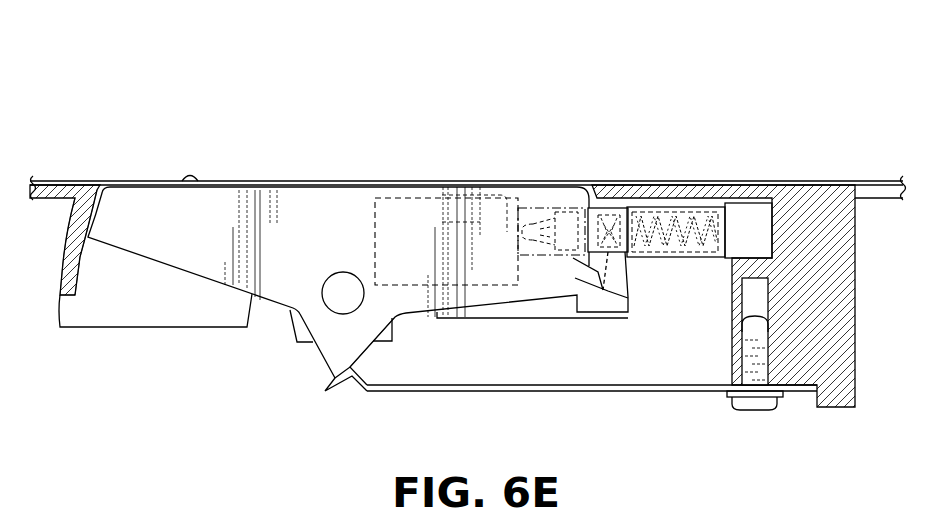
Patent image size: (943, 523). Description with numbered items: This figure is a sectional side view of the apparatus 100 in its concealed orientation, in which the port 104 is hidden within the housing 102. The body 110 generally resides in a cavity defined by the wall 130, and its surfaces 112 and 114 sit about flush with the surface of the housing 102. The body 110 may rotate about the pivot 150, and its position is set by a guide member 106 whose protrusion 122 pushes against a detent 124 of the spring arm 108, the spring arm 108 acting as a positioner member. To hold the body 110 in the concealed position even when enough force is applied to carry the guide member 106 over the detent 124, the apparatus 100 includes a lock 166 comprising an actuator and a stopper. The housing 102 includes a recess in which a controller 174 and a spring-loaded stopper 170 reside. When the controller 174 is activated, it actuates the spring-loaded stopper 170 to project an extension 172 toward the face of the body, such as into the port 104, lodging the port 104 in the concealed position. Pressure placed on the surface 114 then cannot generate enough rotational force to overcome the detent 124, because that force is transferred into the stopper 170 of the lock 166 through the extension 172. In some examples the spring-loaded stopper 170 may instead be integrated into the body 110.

The apparatus 100 is at (522, 94).
The housing 102 is at (808, 181).
The port 104 is at (545, 206).
The guide member 106 is at (306, 364).
The spring arm 108 is at (598, 402).
The body 110 is at (327, 177).
The surface 112 is at (477, 181).
The surface 114 is at (213, 180).
The protrusion 122 is at (366, 350).
The detent 124 is at (360, 391).
The wall 130 is at (103, 203).
The pivot 150 is at (343, 272).
The lock 166 is at (651, 272).
The spring-loaded stopper 170 is at (678, 207).
The extension 172 is at (620, 207).
The controller 174 is at (750, 203).